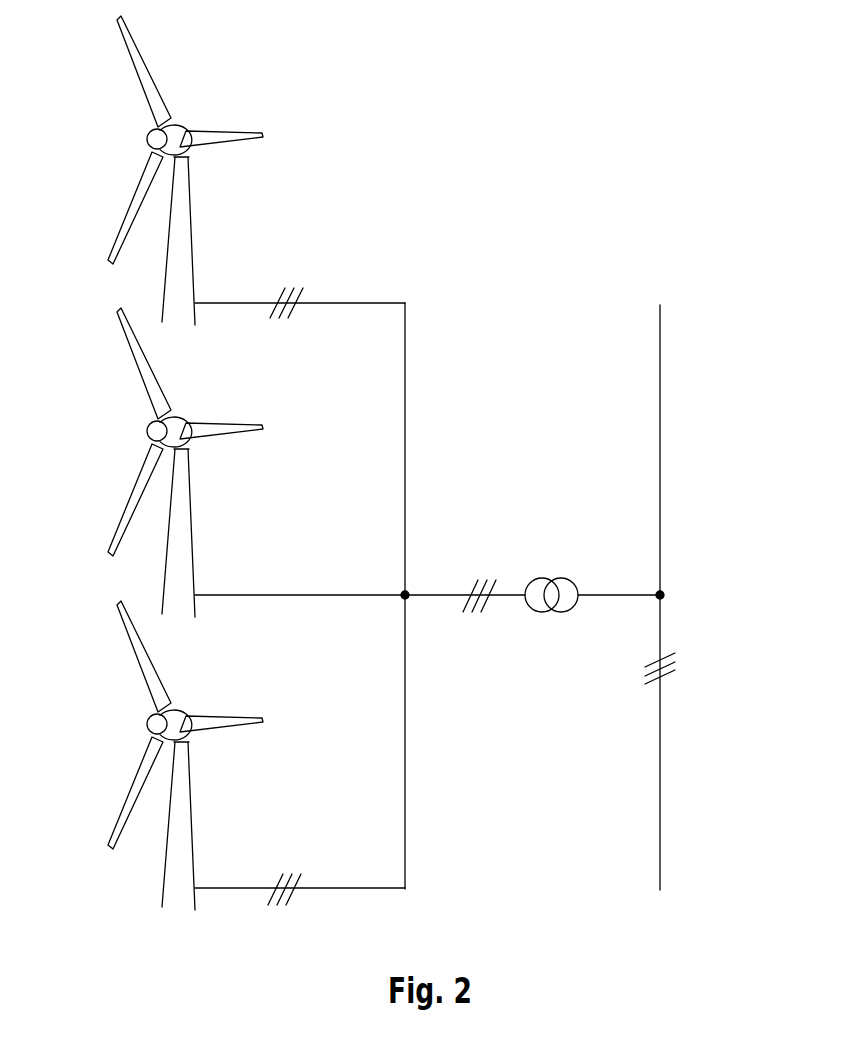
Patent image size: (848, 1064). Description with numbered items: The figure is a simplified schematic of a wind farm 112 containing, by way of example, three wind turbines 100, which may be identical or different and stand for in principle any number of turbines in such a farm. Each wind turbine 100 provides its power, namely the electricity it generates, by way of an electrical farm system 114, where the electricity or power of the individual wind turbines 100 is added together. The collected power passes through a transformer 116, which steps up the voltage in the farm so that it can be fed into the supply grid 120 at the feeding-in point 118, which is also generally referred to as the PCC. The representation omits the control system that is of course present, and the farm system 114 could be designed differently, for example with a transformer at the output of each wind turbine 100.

The wind turbine 100 is at (186, 224).
The wind farm 112 is at (475, 138).
The electrical farm system 114 is at (425, 595).
The transformer 116 is at (553, 572).
The feeding-in point 118 is at (668, 583).
The supply grid 120 is at (660, 335).